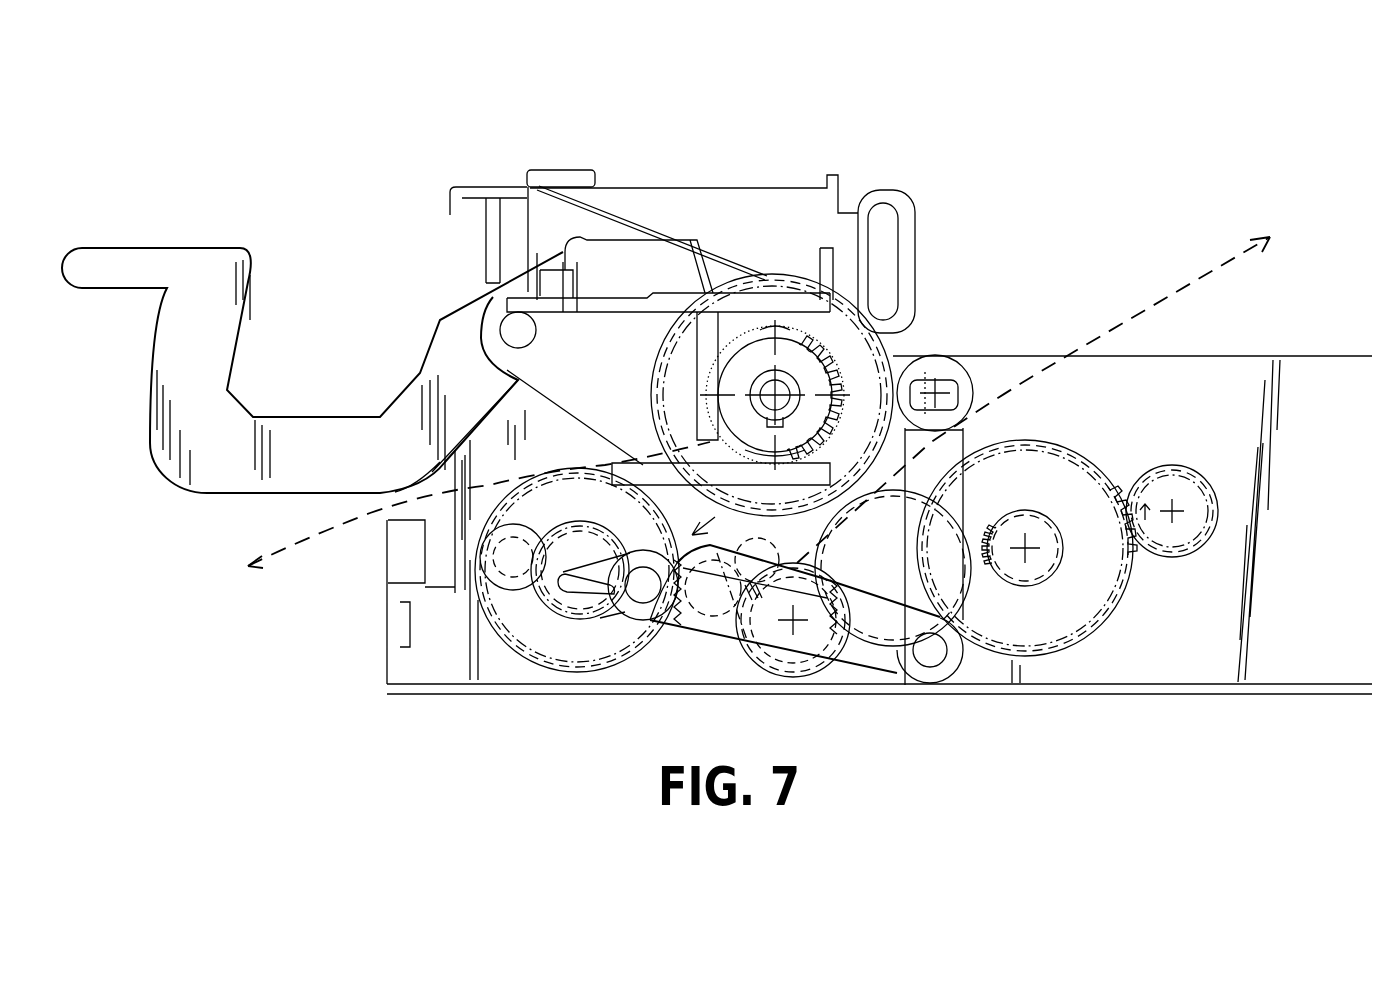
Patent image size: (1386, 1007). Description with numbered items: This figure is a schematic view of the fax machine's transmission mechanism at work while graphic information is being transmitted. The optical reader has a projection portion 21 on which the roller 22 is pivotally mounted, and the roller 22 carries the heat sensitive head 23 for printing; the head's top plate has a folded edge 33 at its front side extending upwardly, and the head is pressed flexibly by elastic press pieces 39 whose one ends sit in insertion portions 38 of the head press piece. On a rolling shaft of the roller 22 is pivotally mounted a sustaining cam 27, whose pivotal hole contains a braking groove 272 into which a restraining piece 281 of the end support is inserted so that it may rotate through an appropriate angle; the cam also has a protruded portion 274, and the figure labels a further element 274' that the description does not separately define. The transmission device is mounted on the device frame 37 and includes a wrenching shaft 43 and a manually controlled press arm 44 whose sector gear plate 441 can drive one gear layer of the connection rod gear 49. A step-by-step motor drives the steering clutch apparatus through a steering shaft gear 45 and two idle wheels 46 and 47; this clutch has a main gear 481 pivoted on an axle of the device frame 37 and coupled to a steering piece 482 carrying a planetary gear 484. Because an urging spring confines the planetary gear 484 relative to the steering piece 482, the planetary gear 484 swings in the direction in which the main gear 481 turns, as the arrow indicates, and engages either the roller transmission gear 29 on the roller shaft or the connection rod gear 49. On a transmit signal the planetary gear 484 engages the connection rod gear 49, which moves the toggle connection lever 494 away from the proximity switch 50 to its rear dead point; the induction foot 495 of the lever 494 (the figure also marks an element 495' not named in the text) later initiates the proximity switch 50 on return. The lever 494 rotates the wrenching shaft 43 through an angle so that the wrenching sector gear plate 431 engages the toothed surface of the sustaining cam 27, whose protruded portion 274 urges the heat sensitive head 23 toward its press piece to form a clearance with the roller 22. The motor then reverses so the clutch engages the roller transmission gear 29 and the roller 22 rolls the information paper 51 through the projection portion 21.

The projection portion 21 is at (928, 377).
The roller 22 is at (893, 337).
The heat sensitive head 23 is at (742, 330).
The sustaining cam 27 is at (848, 355).
The braking groove 272 is at (825, 352).
The protruded portion 274 is at (849, 330).
The lever pivot end 274' is at (542, 402).
The restraining piece 281 is at (770, 370).
The roller transmission gear 29 is at (875, 640).
The folded edge 33 is at (855, 290).
The device frame 37 is at (1295, 670).
The insertion portions 38 is at (570, 172).
The elastic press pieces 39 is at (600, 210).
The wrenching shaft 43 is at (947, 390).
The wrenching sector gear plate 431 is at (937, 353).
The manually controlled press arm 44 is at (340, 415).
The sector gear plate 441 is at (660, 245).
The steering shaft gear 45 is at (1180, 470).
The idle wheel 46 is at (1060, 655).
The idle wheel 47 is at (902, 640).
The main gear 481 is at (777, 653).
The steering piece 482 is at (744, 655).
The planetary gear 484 is at (700, 650).
The connection rod gear 49 is at (620, 650).
The toggle connection lever 494 is at (503, 592).
The induction foot 495 is at (580, 630).
The gear 495' is at (497, 632).
The proximity switch 50 is at (397, 555).
The information paper 51 is at (1128, 300).